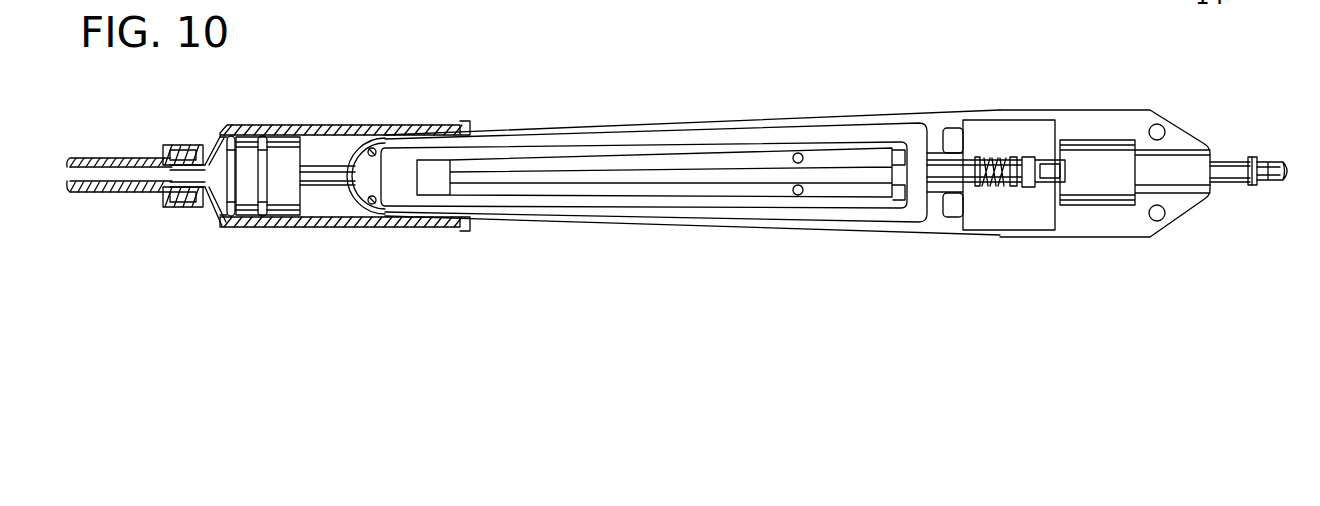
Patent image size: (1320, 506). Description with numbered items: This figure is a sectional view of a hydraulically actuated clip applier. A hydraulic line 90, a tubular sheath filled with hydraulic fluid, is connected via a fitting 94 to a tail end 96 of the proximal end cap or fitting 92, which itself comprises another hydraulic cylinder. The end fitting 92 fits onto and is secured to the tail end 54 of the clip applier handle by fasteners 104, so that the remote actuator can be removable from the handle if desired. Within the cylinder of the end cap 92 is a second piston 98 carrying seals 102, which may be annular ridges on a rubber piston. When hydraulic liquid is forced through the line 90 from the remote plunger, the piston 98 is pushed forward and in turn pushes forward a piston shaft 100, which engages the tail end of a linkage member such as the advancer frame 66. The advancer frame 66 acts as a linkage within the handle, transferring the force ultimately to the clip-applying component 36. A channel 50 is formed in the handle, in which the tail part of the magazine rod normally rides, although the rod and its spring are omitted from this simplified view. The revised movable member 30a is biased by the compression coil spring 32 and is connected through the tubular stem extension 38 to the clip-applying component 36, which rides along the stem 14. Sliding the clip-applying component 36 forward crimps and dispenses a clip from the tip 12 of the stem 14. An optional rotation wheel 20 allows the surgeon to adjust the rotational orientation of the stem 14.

The hydraulic line 90 is at (80, 158).
The fitting 94 is at (186, 143).
The tail end 96 is at (213, 212).
The proximal end cap or fitting 92 is at (347, 125).
The seals 102 is at (263, 137).
The piston 98 is at (287, 145).
The piston shaft 100 is at (320, 176).
The tail end 54 is at (397, 212).
The fasteners 104 is at (374, 148).
The advancer frame 66 is at (625, 140).
The channel 50 is at (743, 173).
The rotation wheel 20 is at (1107, 132).
The revised movable member 30a is at (962, 170).
The compression coil spring 32 is at (1012, 160).
The tubular stem extension 38 is at (997, 188).
The clip-applying component 36 is at (1228, 160).
The tip 12 is at (1280, 163).
The stem 14 is at (1280, 197).